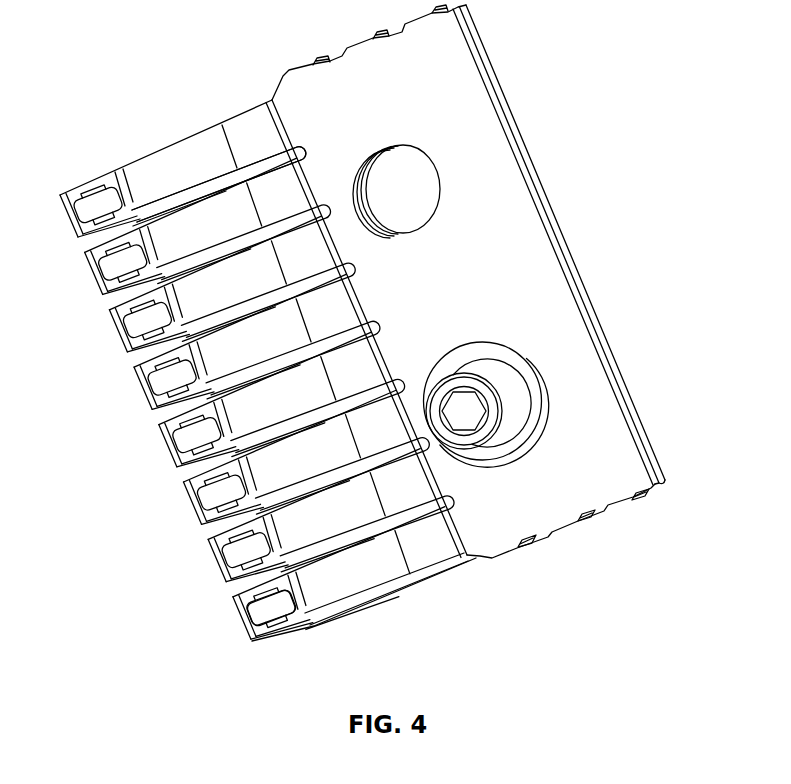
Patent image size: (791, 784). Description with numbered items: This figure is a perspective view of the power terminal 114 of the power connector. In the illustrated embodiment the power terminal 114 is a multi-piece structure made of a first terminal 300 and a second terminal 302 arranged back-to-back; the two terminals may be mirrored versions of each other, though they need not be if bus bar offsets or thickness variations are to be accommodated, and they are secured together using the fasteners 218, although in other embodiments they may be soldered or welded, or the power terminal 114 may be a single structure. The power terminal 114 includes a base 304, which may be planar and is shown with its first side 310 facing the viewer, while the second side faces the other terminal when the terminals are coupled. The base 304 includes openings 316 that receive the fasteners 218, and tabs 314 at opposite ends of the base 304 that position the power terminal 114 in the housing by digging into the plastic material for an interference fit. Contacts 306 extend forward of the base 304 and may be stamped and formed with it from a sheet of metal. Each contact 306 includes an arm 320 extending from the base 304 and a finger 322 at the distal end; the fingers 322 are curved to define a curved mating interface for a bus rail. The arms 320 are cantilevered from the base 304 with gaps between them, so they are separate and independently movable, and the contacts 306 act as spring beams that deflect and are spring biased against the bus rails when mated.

The power terminal 114 is at (245, 40).
The first terminal 300 is at (503, 268).
The second terminal 302 is at (540, 198).
The base 304 is at (560, 488).
The contacts 306 is at (368, 578).
The first side 310 is at (613, 463).
The tabs 314 is at (628, 503).
The openings 316 is at (419, 178).
The arm 320 is at (393, 568).
The finger 322 is at (279, 636).
The fasteners 218 is at (488, 398).